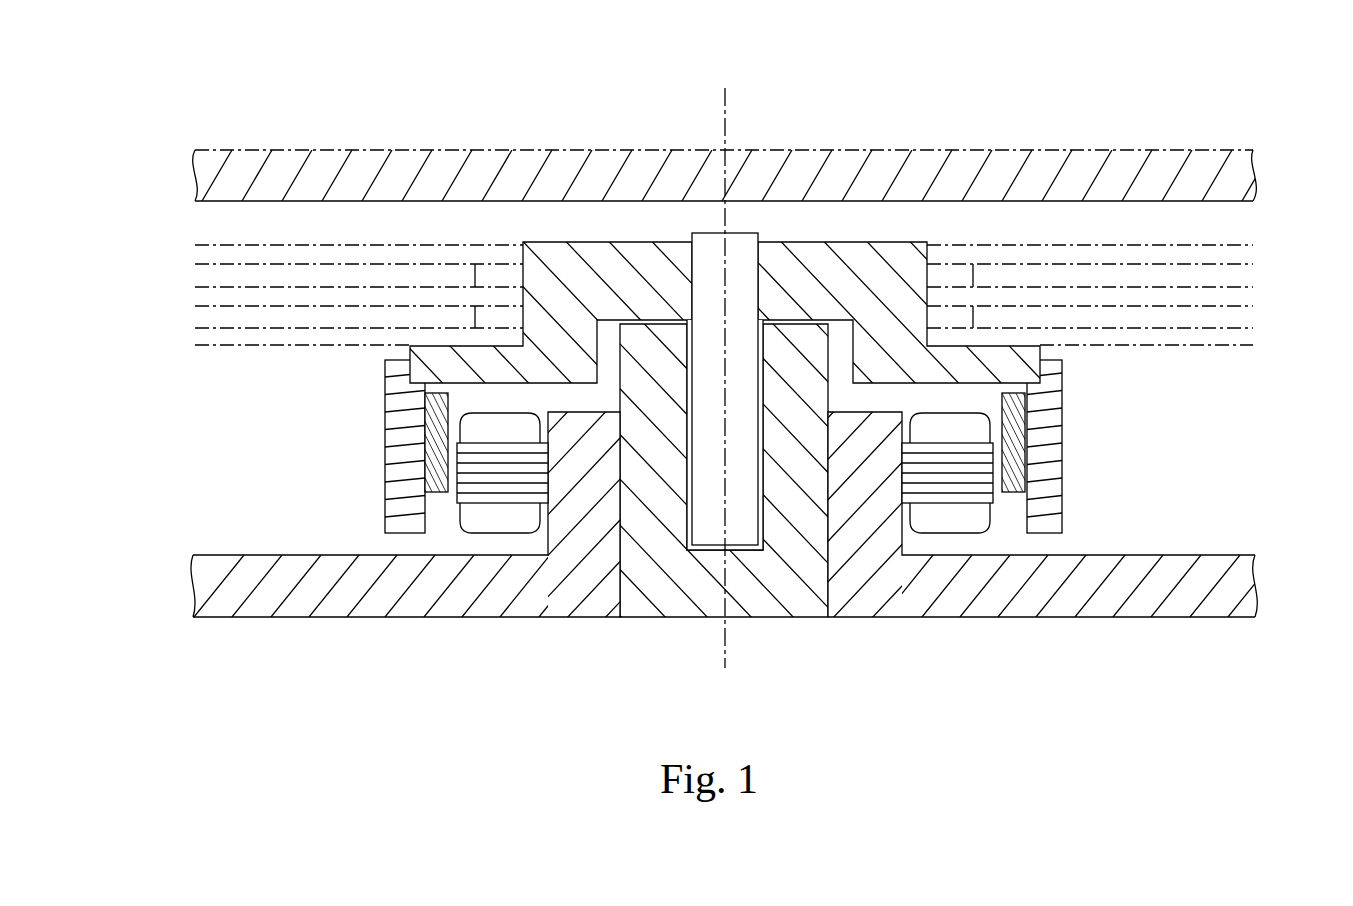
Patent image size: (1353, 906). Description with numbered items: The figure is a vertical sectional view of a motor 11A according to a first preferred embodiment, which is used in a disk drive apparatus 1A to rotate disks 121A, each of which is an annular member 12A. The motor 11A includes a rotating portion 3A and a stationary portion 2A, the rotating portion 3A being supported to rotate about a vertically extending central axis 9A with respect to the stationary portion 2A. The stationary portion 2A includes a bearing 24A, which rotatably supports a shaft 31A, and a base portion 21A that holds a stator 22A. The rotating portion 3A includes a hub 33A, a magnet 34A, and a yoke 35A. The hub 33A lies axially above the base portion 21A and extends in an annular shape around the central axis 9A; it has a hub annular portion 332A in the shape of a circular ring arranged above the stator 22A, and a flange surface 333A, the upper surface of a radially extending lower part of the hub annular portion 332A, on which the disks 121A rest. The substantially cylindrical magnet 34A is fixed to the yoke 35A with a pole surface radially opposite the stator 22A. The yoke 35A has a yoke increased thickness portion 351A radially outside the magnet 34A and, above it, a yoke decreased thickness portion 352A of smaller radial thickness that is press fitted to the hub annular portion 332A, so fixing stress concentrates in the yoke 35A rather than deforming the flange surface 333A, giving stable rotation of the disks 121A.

The disk drive apparatus 1A is at (913, 125).
The stationary portion 2A is at (583, 623).
The rotating portion 3A is at (800, 225).
The central axis 9A is at (725, 138).
The motor 11A is at (630, 223).
The annular member 12A is at (359, 295).
The disk 121A is at (1072, 295).
The base portion 21A is at (863, 543).
The stator 22A is at (935, 537).
The bearing 24A is at (663, 563).
The shaft 31A is at (737, 513).
The hub 33A is at (462, 180).
The hub annular portion 332A is at (558, 320).
The flange surface 333A is at (460, 323).
The magnet 34A is at (1013, 493).
The yoke 35A is at (680, 549).
The yoke increased thickness portion 351A is at (403, 473).
The yoke decreased thickness portion 352A is at (400, 368).